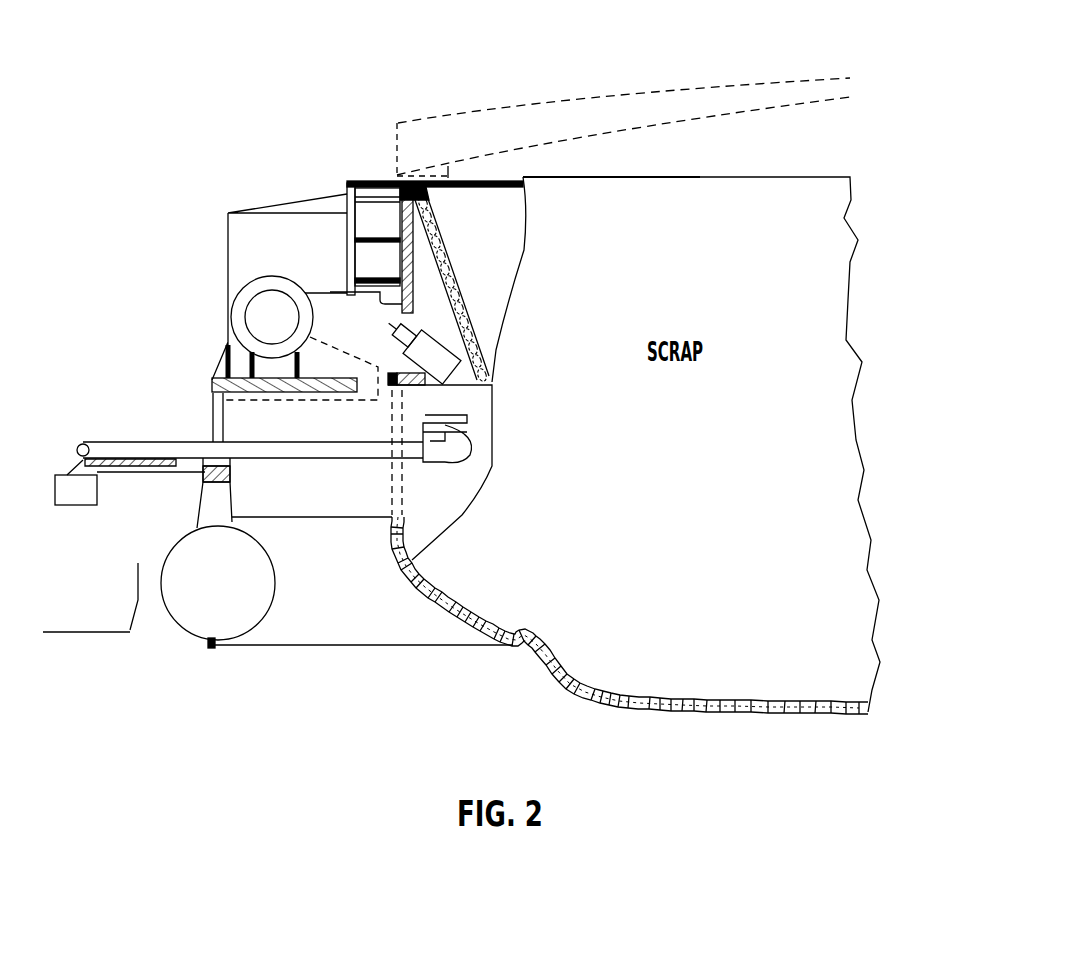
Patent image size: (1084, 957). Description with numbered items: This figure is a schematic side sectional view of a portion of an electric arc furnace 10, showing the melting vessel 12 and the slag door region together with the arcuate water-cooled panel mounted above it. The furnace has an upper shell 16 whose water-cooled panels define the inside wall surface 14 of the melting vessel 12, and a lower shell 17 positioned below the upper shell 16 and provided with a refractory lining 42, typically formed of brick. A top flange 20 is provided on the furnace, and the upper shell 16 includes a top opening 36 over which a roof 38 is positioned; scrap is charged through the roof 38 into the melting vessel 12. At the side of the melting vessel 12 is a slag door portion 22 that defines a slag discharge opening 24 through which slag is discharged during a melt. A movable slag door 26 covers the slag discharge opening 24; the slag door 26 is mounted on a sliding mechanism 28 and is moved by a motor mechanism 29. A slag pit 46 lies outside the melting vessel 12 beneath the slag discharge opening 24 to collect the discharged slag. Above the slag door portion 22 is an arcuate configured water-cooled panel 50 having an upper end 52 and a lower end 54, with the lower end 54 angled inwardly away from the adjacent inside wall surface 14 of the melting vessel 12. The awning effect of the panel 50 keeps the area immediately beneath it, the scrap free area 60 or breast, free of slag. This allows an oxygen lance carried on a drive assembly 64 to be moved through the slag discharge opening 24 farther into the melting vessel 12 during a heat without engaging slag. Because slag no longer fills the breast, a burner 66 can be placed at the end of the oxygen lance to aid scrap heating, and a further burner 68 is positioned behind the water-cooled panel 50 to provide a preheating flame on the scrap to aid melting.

The electric arc furnace 10 is at (548, 66).
The melting vessel 12 is at (776, 172).
The inside wall surface 14 is at (415, 262).
The upper shell 16 is at (775, 240).
The lower shell 17 is at (749, 640).
The top flange 20 is at (366, 185).
The slag door portion 22 is at (275, 492).
The slag discharge opening 24 is at (307, 426).
The slag door 26 is at (216, 425).
The sliding mechanism 28 is at (214, 386).
The motor mechanism 29 is at (240, 323).
The top opening 36 is at (575, 176).
The roof 38 is at (477, 110).
The refractory lining 42 is at (465, 618).
The slag pit 46 is at (92, 633).
The arcuate configured water-cooled panel 50 is at (476, 300).
The upper end 52 is at (424, 190).
The lower end 54 is at (493, 380).
The scrap free area 60 is at (464, 403).
The drive assembly 64 is at (80, 505).
The burner 66 is at (468, 437).
The burner 68 is at (432, 360).